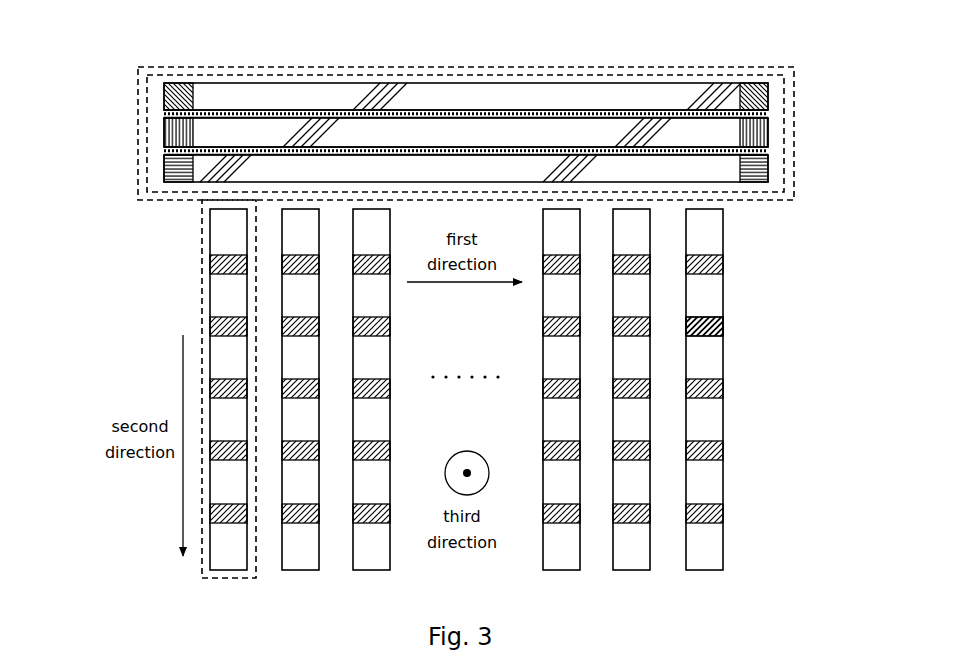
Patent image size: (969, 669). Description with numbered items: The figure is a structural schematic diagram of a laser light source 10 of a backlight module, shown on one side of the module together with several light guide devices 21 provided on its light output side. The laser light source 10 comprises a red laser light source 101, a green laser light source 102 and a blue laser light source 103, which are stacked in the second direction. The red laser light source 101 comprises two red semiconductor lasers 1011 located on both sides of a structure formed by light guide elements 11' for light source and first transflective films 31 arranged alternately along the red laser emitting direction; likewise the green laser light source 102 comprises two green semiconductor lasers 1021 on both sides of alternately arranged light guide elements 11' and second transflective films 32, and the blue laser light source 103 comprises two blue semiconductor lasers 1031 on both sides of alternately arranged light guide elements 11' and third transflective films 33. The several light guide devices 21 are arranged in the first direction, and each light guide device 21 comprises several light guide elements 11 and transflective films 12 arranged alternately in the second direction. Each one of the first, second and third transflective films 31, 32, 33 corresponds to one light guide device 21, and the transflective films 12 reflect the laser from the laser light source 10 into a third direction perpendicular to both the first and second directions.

The laser light source 10 is at (685, 67).
The red laser light source 101 is at (465, 128).
The green laser light source 102 is at (465, 106).
The blue laser light source 103 is at (465, 83).
The red semiconductor laser 1011 is at (164, 178).
The green semiconductor laser 1021 is at (164, 138).
The blue semiconductor laser 1031 is at (164, 100).
The light guide element 11 is at (739, 385).
The light guide element for light source 11' is at (384, 133).
The transflective film 12 is at (722, 325).
The light guide device 21 is at (200, 292).
The first transflective film 31 is at (226, 172).
The second transflective film 32 is at (310, 125).
The third transflective film 33 is at (405, 83).